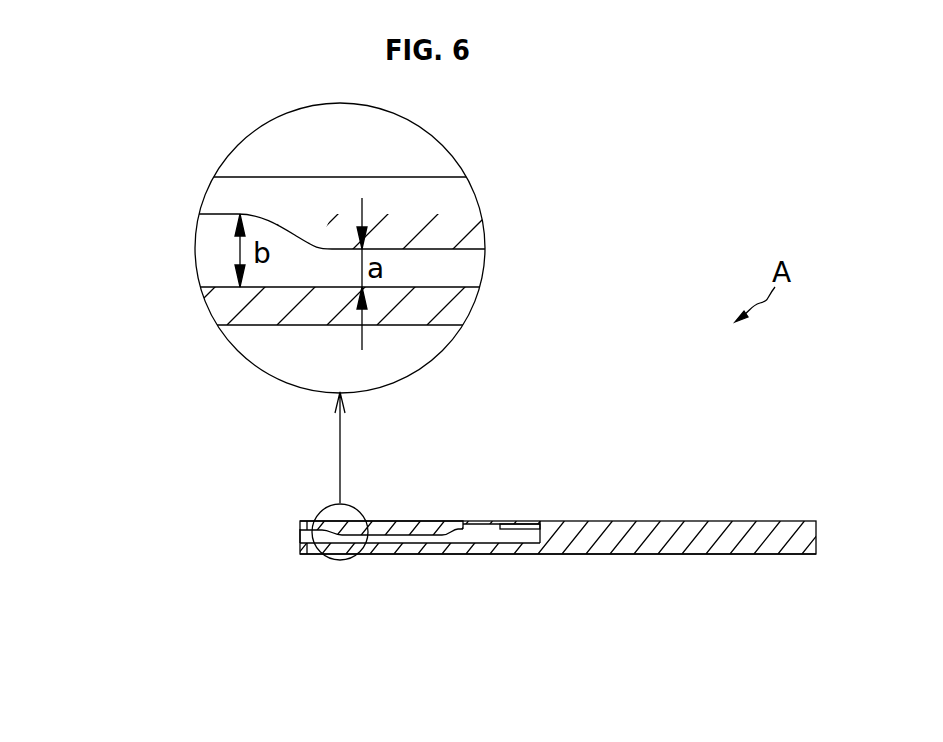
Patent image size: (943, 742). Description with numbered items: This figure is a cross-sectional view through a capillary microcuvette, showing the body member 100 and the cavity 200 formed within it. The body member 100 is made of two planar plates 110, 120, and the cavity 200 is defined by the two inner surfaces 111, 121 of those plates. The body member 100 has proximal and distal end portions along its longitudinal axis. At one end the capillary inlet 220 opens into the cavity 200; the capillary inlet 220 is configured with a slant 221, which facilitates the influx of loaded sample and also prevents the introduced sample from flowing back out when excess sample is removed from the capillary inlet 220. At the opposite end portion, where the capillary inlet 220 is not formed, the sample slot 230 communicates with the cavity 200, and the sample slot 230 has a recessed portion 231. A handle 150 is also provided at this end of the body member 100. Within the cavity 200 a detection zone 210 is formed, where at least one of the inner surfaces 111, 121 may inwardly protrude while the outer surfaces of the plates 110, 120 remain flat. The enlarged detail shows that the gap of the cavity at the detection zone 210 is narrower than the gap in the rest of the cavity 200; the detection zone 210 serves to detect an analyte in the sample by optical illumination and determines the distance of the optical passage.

The body member 100 is at (539, 571).
The plate 110 is at (430, 520).
The inner surface of the plate 111 is at (302, 532).
The plate 120 is at (380, 550).
The inner surface of the plate 121 is at (467, 543).
The handle 150 is at (743, 527).
The cavity 200 is at (207, 242).
The detection zone 210 is at (442, 237).
The capillary inlet 220 is at (298, 537).
The slant 221 is at (300, 543).
The sample slot 230 is at (497, 520).
The recessed portion 231 is at (527, 523).